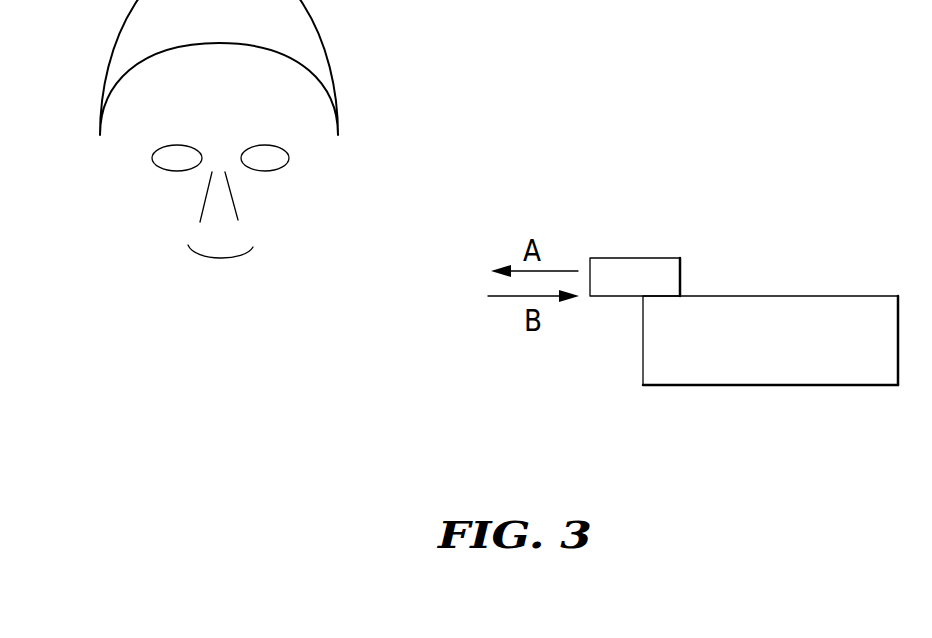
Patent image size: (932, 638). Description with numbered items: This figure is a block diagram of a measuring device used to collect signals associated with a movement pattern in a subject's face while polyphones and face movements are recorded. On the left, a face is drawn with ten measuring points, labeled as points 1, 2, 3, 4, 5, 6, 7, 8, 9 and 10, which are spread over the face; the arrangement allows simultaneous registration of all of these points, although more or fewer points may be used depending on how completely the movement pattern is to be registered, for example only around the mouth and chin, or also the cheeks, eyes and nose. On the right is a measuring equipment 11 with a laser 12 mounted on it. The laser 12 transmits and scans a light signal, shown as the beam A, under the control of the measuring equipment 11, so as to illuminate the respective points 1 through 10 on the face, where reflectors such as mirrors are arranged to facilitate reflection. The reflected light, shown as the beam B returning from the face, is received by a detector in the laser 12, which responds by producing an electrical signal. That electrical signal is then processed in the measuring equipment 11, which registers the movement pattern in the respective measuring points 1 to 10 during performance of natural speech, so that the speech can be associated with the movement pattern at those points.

The measuring point 1 is at (265, 218).
The measuring point 2 is at (263, 245).
The measuring point 3 is at (252, 259).
The measuring point 4 is at (265, 283).
The measuring point 5 is at (225, 272).
The measuring point 6 is at (188, 283).
The measuring point 7 is at (177, 245).
The measuring point 8 is at (200, 232).
The measuring point 9 is at (150, 145).
The measuring point 10 is at (302, 170).
The measuring equipment 11 is at (810, 385).
The laser 12 is at (643, 258).